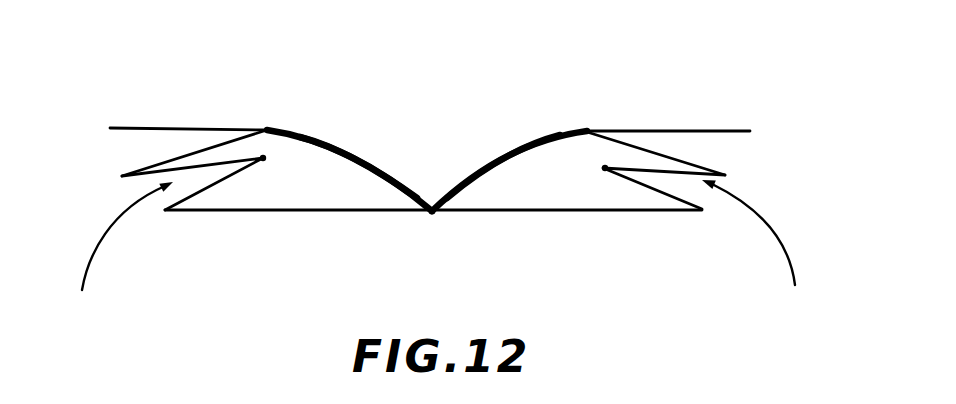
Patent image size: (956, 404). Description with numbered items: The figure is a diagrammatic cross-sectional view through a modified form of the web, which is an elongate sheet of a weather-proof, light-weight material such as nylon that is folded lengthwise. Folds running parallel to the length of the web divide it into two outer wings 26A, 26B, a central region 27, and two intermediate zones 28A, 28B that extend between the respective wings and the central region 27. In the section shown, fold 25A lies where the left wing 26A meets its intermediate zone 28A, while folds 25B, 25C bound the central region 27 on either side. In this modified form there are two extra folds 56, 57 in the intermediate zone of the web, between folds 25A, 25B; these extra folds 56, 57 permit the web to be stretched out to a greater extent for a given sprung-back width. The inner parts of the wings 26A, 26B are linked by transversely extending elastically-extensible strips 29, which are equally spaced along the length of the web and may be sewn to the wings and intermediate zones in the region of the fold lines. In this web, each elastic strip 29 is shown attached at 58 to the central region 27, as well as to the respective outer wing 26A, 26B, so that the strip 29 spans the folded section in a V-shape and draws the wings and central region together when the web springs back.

The outer wing 26A is at (172, 127).
The outer wing 26B is at (710, 128).
The fold 25A is at (273, 127).
The elastically-extensible strip 29 is at (497, 162).
The attachment point 58 is at (432, 213).
The central region 27 is at (313, 210).
The extra fold 56 is at (122, 177).
The fold 25B is at (193, 260).
The fold 25C is at (706, 213).
The extra fold 57 is at (271, 163).
The intermediate zone 28A is at (114, 262).
The intermediate zone 28B is at (759, 260).